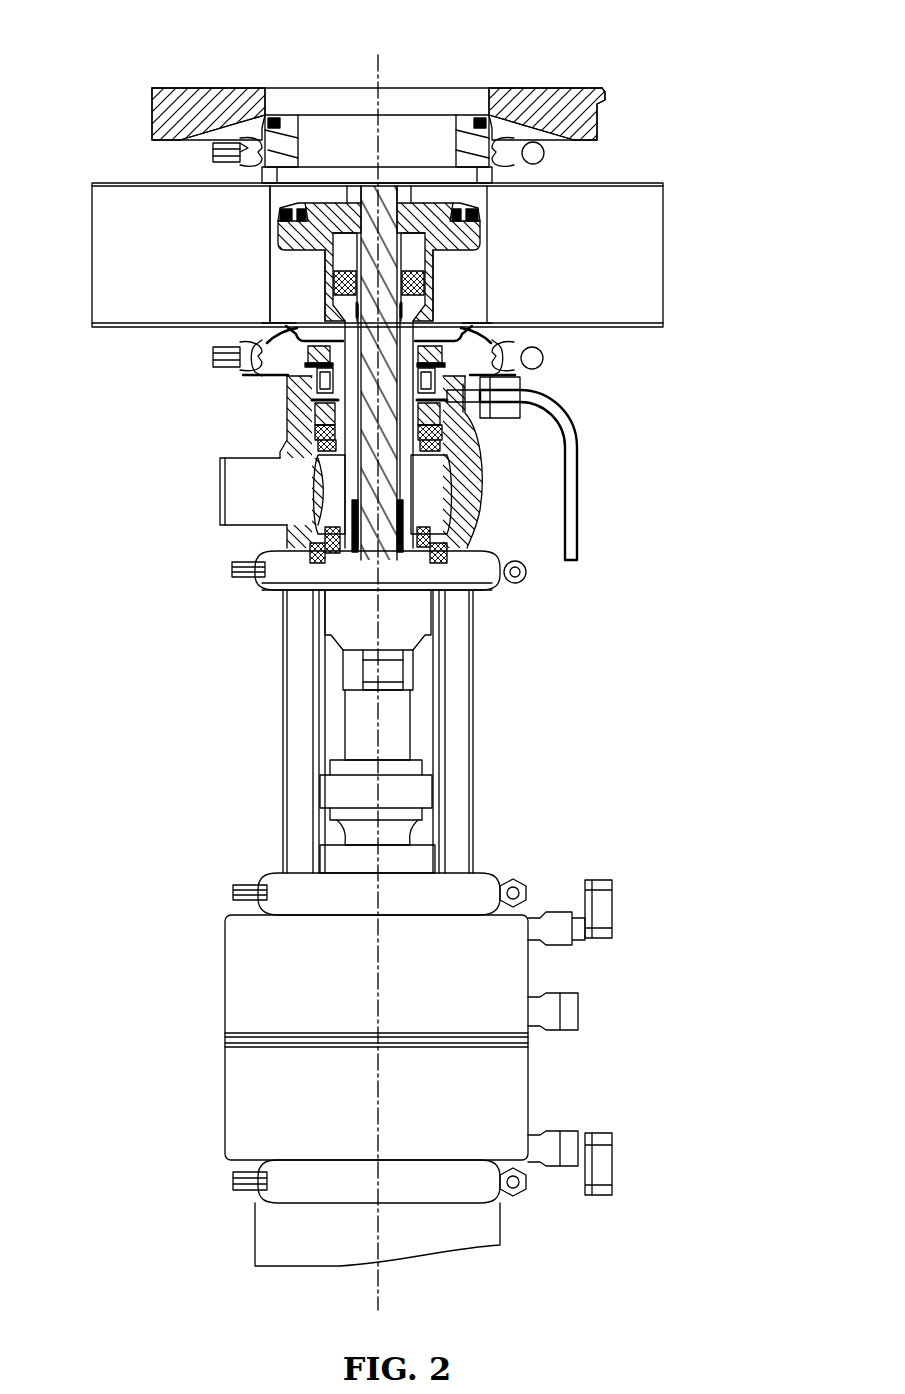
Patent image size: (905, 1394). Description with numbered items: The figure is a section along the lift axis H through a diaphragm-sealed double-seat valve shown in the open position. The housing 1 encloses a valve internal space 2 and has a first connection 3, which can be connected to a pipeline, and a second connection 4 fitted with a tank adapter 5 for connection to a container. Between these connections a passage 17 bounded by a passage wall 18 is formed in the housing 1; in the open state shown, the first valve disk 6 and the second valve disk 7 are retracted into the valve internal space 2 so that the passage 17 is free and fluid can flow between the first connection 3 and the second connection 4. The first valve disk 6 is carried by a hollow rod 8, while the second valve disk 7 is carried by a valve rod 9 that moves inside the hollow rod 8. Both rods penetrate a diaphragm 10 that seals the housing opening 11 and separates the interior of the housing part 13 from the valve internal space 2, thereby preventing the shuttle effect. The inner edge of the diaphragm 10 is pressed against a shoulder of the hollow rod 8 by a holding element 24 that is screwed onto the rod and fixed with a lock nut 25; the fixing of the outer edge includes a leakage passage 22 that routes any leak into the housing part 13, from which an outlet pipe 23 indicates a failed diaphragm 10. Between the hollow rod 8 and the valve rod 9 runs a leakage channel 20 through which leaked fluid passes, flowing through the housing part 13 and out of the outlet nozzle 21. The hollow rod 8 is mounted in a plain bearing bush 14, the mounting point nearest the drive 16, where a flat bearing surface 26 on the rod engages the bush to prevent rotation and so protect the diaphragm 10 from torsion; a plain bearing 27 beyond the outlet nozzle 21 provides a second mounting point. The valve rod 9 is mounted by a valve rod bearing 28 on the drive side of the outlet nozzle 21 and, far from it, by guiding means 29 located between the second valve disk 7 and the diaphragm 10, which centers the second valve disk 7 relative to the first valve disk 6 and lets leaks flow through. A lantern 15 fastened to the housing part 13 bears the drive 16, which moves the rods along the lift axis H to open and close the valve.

The housing 1 is at (207, 349).
The valve internal space 2 is at (287, 282).
The first connection 3 is at (638, 184).
The second connection 4 is at (495, 157).
The tank adapter 5 is at (603, 93).
The first valve disk 6 is at (445, 205).
The second valve disk 7 is at (424, 195).
The hollow rod 8 is at (470, 288).
The valve rod 9 is at (435, 250).
The diaphragm 10 is at (470, 312).
The housing opening 11 is at (495, 333).
The housing part 13 is at (462, 484).
The plain bearing bush 14 is at (338, 622).
The lantern 15 is at (303, 748).
The drive 16 is at (250, 978).
The passage 17 is at (290, 138).
The passage wall 18 is at (302, 148).
The leakage channel 20 is at (398, 468).
The outlet nozzle 21 is at (230, 456).
The leakage passage 22 is at (545, 358).
The outlet pipe 23 is at (567, 410).
The holding element 24 is at (315, 377).
The lock nut 25 is at (495, 385).
The bearing surface 26 is at (383, 676).
The plain bearing 27 is at (318, 408).
The valve rod bearing 28 is at (398, 536).
The guiding means 29 is at (333, 288).
The lift axis H is at (375, 58).